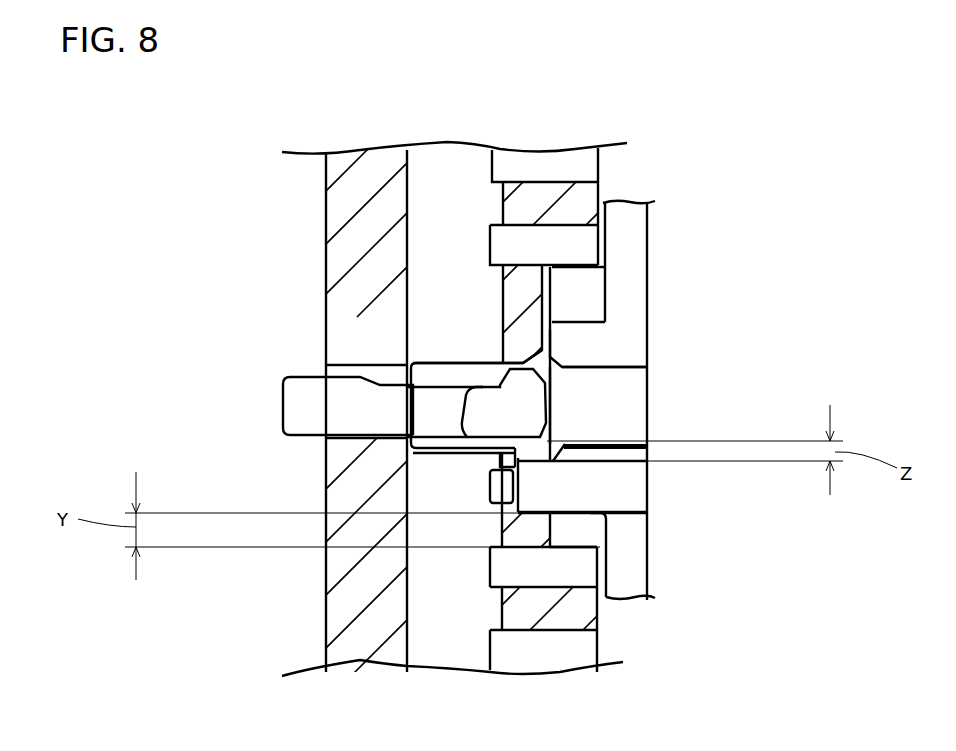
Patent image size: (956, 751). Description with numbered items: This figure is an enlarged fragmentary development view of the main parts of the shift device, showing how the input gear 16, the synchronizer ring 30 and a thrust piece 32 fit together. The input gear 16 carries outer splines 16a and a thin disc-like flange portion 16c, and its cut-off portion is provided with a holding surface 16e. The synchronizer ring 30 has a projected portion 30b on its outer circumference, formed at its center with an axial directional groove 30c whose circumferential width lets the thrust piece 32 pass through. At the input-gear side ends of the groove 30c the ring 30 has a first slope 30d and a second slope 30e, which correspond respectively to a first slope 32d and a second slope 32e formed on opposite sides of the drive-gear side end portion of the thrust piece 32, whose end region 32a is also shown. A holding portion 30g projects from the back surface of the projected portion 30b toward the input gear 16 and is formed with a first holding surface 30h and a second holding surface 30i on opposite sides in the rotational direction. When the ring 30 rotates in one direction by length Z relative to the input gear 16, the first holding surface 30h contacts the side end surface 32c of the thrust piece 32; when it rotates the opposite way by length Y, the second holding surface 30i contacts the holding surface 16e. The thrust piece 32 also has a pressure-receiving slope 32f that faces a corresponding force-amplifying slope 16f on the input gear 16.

The input gear 16 is at (327, 223).
The outer splines 16a is at (552, 590).
The flange portion 16c is at (357, 205).
The holding surface 16e is at (577, 543).
The force-amplifying slope 16f is at (525, 363).
The synchronizer ring 30 is at (647, 230).
The projected portions 30b is at (575, 342).
The axial directional groove 30c is at (595, 407).
The first slope 30d is at (497, 457).
The second slope 30e is at (540, 350).
The holding portions 30g is at (532, 495).
The first holding surface 30h is at (490, 467).
The second holding surface 30i is at (587, 515).
The thrust piece 32 is at (310, 408).
The head portion of pin 32a is at (440, 416).
The side end surface 32c is at (505, 452).
The first slope 32d is at (553, 437).
The second slope 32e is at (648, 374).
The pressure-receiving slope 32f is at (463, 363).